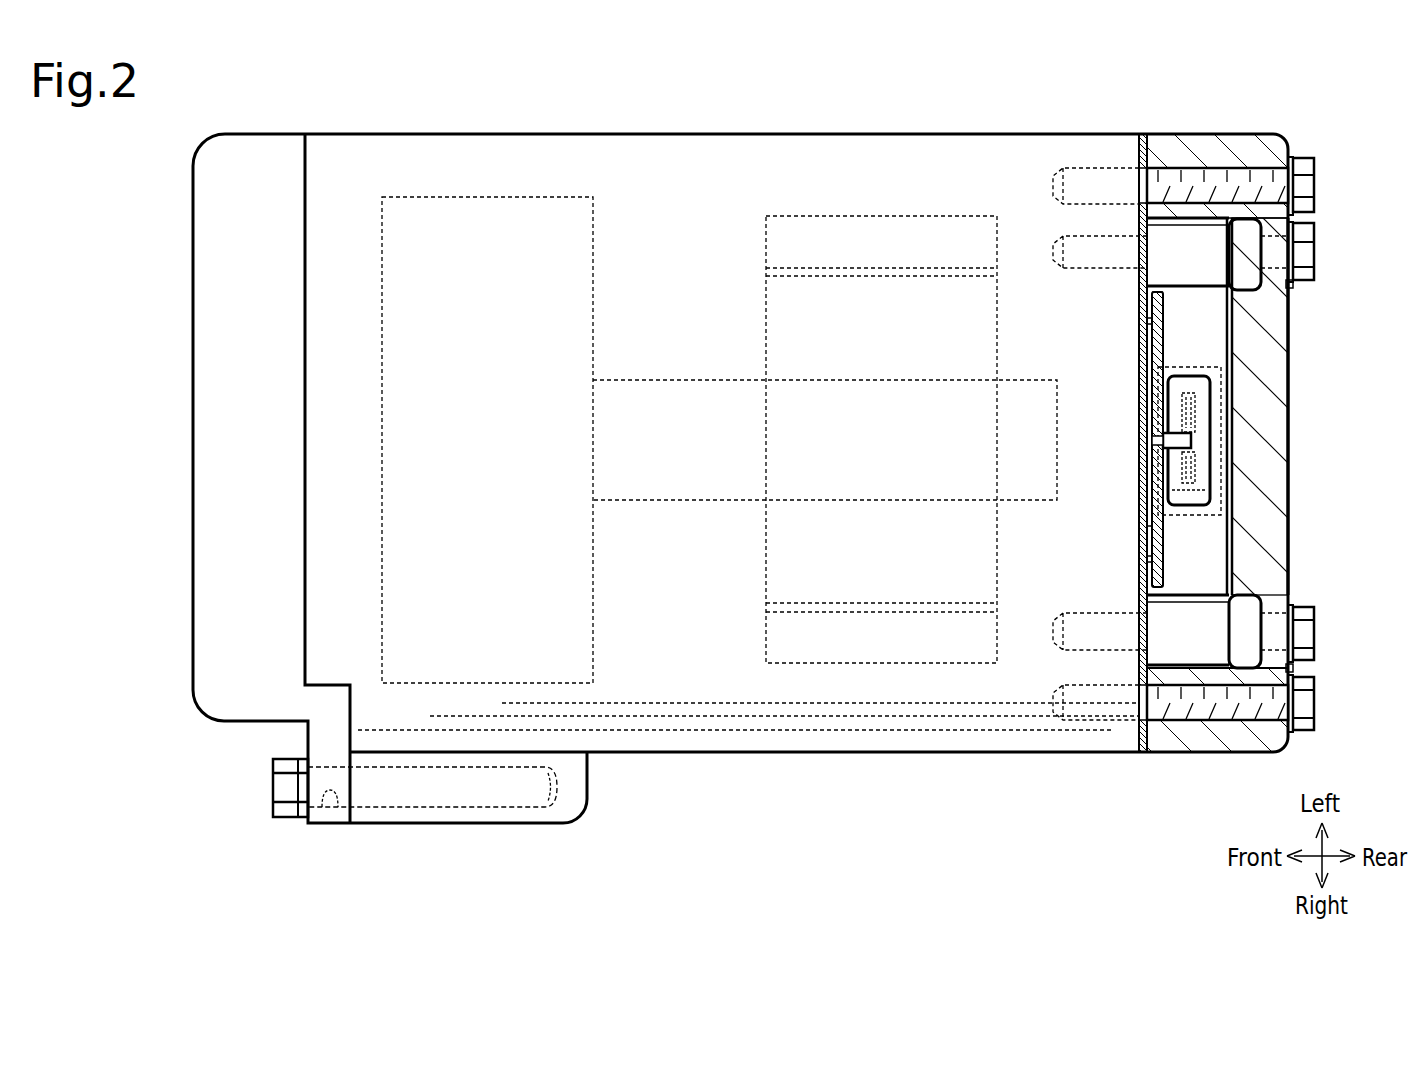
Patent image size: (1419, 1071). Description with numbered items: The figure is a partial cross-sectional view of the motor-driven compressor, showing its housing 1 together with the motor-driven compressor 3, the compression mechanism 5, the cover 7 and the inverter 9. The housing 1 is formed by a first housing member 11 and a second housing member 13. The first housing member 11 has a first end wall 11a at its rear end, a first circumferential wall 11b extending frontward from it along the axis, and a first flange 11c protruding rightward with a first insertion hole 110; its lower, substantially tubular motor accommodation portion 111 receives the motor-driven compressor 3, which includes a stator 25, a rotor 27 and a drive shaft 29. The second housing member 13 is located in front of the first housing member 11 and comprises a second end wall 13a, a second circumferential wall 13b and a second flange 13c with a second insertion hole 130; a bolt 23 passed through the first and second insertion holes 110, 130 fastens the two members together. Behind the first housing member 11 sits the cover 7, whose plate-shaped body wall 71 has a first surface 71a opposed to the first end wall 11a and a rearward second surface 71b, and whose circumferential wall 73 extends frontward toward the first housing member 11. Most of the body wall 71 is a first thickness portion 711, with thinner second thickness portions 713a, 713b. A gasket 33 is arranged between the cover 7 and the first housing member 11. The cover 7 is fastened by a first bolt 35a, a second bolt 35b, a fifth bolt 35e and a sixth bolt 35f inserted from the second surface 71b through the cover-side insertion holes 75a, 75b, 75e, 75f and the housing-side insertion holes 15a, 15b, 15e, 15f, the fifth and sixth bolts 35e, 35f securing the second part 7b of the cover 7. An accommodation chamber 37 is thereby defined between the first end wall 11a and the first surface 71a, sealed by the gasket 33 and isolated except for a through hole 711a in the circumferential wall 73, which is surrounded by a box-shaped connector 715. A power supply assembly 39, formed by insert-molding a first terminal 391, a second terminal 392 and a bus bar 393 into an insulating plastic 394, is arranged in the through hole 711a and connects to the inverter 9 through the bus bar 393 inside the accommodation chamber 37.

The housing 1 is at (225, 122).
The motor-driven compressor 3 is at (830, 213).
The compression mechanism 5 is at (540, 196).
The cover 7 is at (1192, 130).
The second part 7b is at (1210, 756).
The inverter 9 is at (1162, 476).
The first housing member 11 is at (978, 132).
The first end wall 11a is at (1146, 520).
The first circumferential wall 11b is at (740, 133).
The first flange 11c is at (590, 780).
The second housing member 13 is at (188, 665).
The second end wall 13a is at (193, 345).
The second circumferential wall 13b is at (280, 133).
The second flange 13c is at (325, 747).
The first housing-side insertion hole 15a is at (1074, 180).
The fifth housing-side insertion hole 15e is at (1072, 266).
The sixth housing-side insertion hole 15f is at (1072, 636).
The second housing-side insertion hole 15b is at (1072, 725).
The bolt 23 is at (280, 795).
The stator 25 is at (935, 226).
The rotor 27 is at (768, 343).
The drive shaft 29 is at (680, 490).
The gasket 33 is at (1145, 134).
The first bolt 35a is at (1300, 180).
The fifth bolt 35e is at (1306, 270).
The sixth bolt 35f is at (1308, 642).
The second bolt 35b is at (1308, 712).
The accommodation chamber 37 is at (1208, 583).
The power supply assembly 39 is at (1224, 438).
The first terminal 391 is at (1200, 400).
The second terminal 392 is at (1198, 462).
The bus bar 393 is at (1162, 440).
The insulating plastic 394 is at (1212, 496).
The body wall 71 is at (1266, 338).
The first surface 71a is at (1290, 328).
The second surface 71b is at (1289, 578).
The circumferential wall 73 is at (1168, 740).
The first cover-side insertion hole 75a is at (1222, 170).
The fifth cover-side insertion hole 75e is at (1262, 236).
The sixth cover-side insertion hole 75f is at (1250, 628).
The second cover-side insertion hole 75b is at (1240, 740).
The first insertion hole 110 is at (560, 795).
The motor accommodation portion 111 is at (712, 665).
The second insertion hole 130 is at (332, 800).
The first thickness portion 711 is at (1166, 540).
The through hole 711a is at (1158, 378).
The second thickness portion 713a is at (1294, 284).
The second thickness portion 713b is at (1294, 672).
The connector 715 is at (1212, 380).